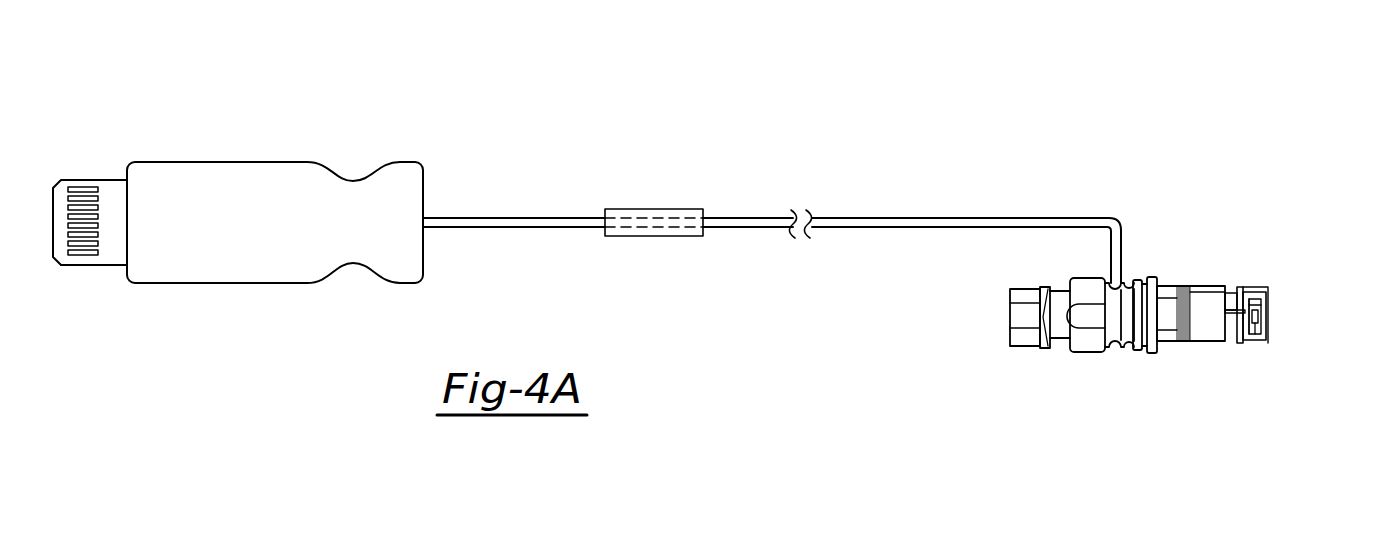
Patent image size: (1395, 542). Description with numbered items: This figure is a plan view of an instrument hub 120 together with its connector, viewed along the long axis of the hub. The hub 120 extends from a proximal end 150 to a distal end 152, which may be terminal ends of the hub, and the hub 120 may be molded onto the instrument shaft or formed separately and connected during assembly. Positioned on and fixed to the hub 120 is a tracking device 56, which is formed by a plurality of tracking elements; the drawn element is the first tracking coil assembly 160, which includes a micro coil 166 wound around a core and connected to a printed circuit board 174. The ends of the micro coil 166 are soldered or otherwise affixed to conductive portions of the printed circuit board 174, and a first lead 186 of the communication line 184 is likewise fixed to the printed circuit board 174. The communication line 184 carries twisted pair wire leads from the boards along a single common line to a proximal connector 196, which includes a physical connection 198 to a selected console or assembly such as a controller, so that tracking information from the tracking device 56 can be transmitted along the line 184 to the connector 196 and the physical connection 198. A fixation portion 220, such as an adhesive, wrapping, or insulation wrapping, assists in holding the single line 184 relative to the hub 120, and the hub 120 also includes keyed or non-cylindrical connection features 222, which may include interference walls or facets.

The physical connection 198 is at (103, 180).
The proximal connector 196 is at (265, 152).
The connector or communication line 184 is at (999, 216).
The keyed or non-cylindrical features 222 is at (1080, 277).
The proximal end 150 is at (1009, 340).
The fixation portion or member 220 is at (1181, 285).
The hub 120 is at (1118, 275).
The tracking device 56 is at (1288, 300).
The printed circuit board 174 is at (1266, 311).
The first tracking coil assembly 160 is at (1262, 313).
The micro coil 166 is at (1262, 320).
The first lead 186 is at (1232, 314).
The distal end 152 is at (1280, 341).